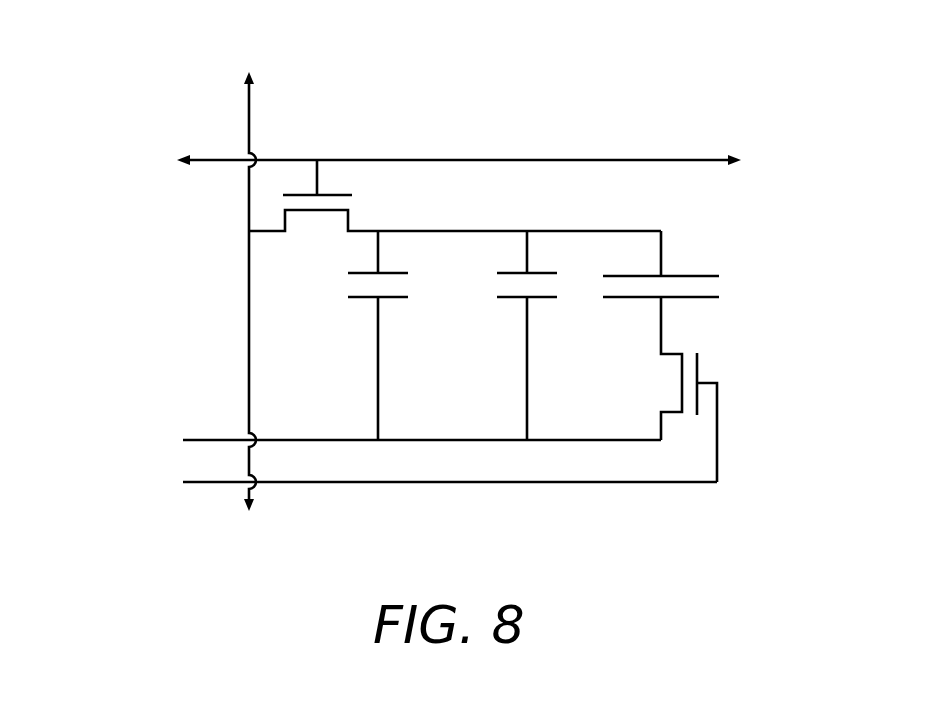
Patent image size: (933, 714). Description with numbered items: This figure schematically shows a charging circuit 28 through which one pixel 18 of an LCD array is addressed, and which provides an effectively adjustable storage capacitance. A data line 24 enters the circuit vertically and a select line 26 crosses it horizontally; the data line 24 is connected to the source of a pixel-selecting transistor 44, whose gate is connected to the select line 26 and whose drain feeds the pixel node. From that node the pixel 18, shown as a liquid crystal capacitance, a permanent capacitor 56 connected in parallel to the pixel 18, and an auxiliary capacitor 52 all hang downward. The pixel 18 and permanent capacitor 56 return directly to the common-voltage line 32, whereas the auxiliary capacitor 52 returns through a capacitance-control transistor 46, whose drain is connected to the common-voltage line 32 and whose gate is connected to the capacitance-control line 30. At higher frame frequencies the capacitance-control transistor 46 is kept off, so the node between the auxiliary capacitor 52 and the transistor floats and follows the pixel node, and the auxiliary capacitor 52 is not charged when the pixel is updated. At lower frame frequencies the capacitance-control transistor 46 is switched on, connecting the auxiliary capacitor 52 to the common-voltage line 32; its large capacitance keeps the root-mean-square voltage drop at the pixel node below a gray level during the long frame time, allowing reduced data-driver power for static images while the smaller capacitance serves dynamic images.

The charging circuit 28 is at (843, 96).
The data line 24 is at (249, 277).
The select line 26 is at (401, 160).
The pixel-selecting transistor 44 is at (280, 176).
The pixel 18 is at (360, 335).
The permanent capacitor 56 is at (506, 323).
The auxiliary capacitor 52 is at (684, 335).
The capacitance-control transistor 46 is at (711, 353).
The common-voltage line 32 is at (382, 438).
The capacitance-control line 30 is at (367, 481).